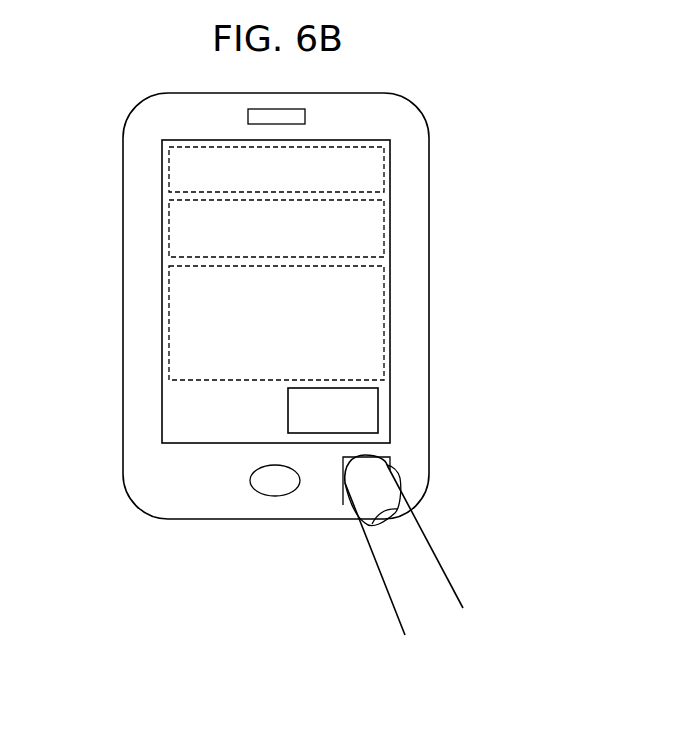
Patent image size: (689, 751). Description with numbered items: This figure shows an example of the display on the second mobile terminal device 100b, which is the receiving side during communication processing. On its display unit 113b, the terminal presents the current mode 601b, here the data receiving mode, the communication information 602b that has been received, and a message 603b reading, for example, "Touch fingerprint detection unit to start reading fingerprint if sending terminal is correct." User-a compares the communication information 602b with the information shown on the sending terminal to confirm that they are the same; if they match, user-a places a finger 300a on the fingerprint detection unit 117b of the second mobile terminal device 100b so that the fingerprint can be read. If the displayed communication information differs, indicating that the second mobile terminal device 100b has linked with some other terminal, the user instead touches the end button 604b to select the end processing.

The second mobile terminal device 100b is at (429, 331).
The display unit 113b is at (390, 199).
The current mode 601b is at (169, 171).
The communication information 602b is at (169, 231).
The message 603b is at (169, 319).
The end button 604b is at (378, 409).
The fingerprint detection unit 117b is at (390, 459).
The finger 300a is at (442, 560).